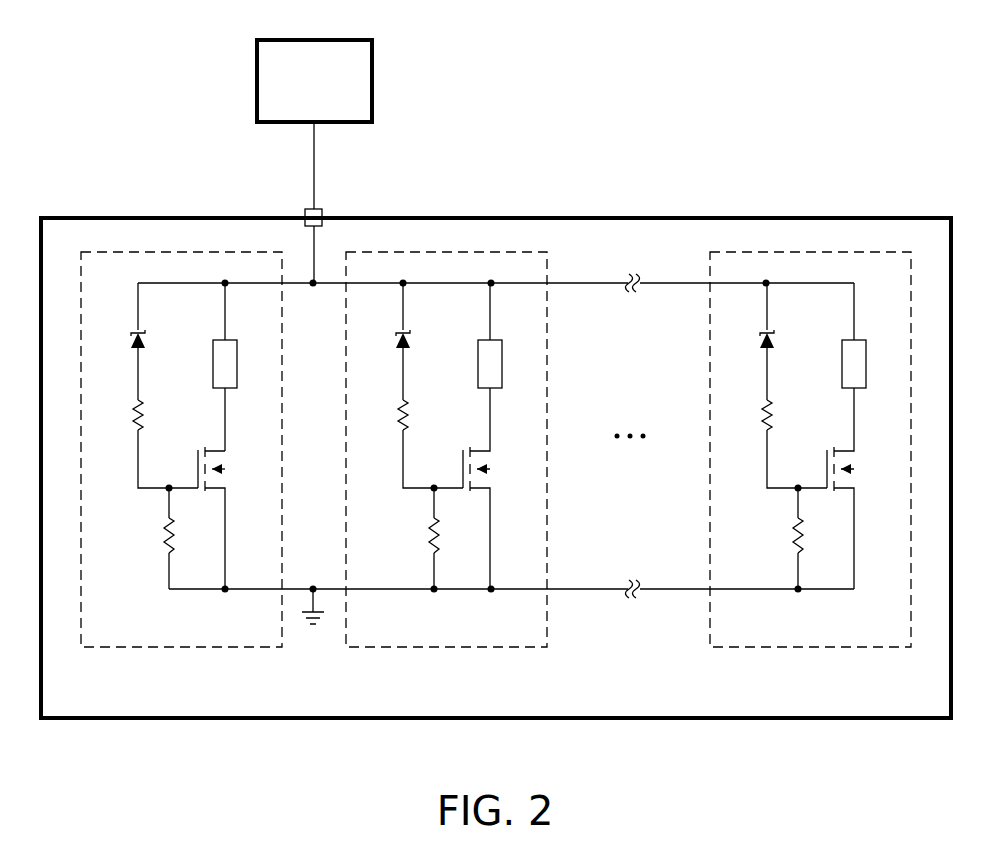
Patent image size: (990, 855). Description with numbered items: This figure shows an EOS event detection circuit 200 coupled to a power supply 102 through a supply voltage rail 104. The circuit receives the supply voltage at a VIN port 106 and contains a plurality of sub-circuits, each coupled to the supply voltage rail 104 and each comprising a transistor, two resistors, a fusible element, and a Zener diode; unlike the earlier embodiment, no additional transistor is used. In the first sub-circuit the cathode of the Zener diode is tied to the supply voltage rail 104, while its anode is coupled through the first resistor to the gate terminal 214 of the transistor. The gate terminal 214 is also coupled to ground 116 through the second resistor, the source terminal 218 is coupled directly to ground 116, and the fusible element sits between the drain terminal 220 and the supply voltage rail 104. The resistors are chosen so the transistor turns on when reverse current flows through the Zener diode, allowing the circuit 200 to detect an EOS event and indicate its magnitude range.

The EOS event detection circuit 200 is at (921, 81).
The power supply 102 is at (373, 73).
The supply voltage rail 104 is at (315, 165).
The VIN port 106 is at (309, 211).
The ground 116 is at (303, 611).
The gate terminal 214 is at (181, 488).
The source terminal 218 is at (225, 493).
The drain terminal 220 is at (225, 445).